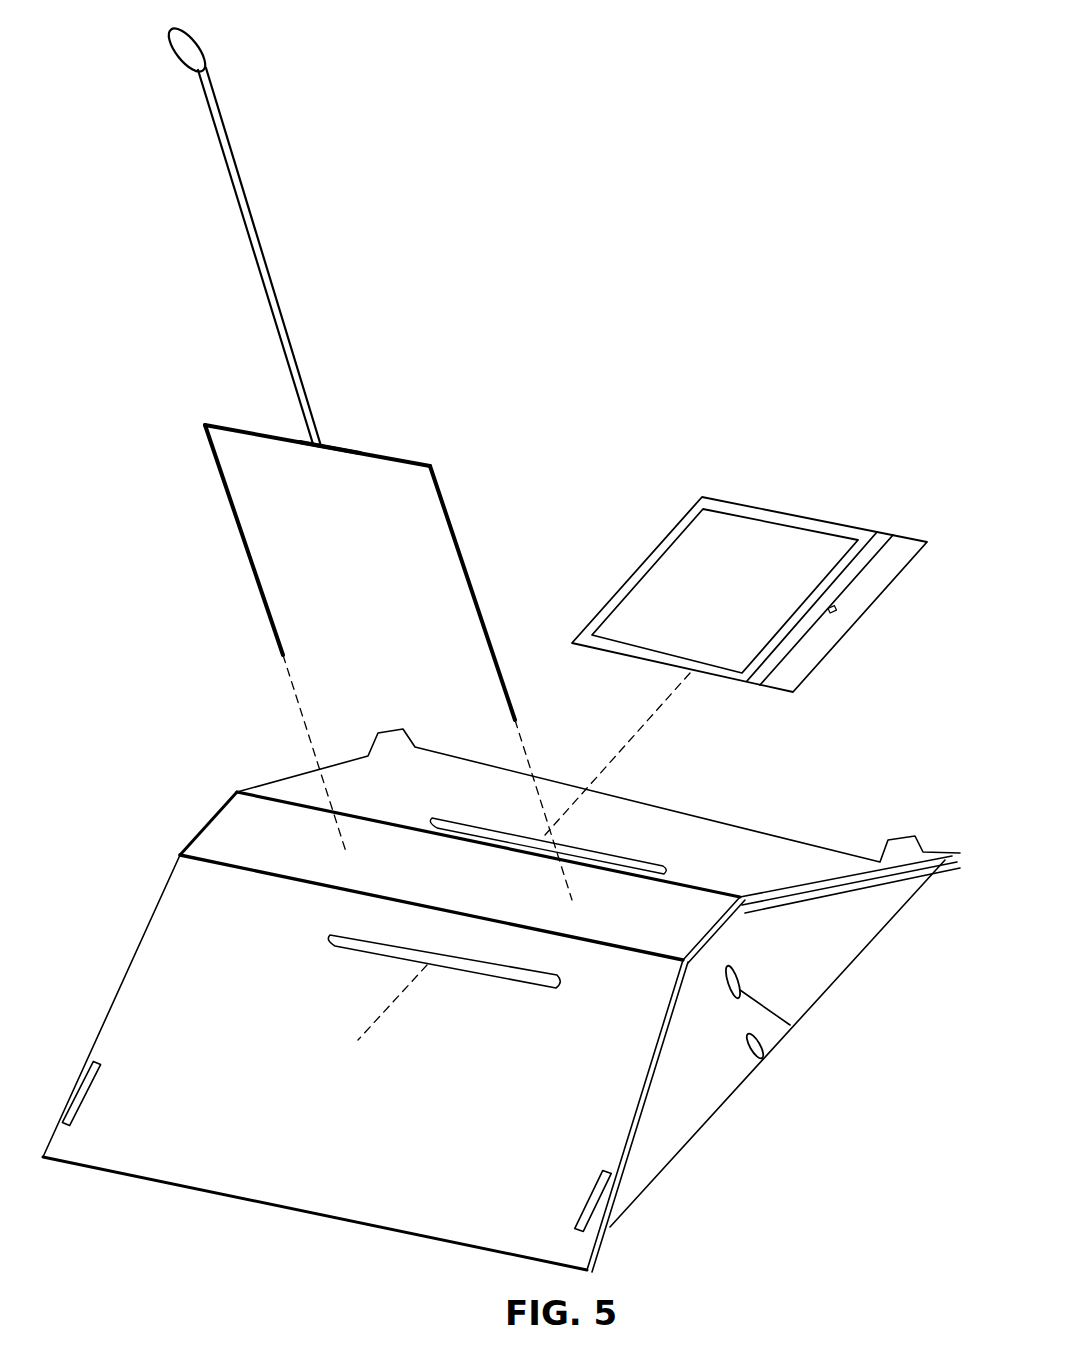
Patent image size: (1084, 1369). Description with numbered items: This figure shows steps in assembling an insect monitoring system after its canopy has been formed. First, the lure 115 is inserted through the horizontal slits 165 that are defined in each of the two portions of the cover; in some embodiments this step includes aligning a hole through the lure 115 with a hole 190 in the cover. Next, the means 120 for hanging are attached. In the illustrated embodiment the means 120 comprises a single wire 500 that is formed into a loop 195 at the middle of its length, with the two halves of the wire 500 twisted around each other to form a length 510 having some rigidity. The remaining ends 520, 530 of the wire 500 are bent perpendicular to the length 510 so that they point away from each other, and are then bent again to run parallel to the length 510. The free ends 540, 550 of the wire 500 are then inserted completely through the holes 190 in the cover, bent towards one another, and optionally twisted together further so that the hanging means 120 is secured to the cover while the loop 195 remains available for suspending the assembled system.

The lure 115 is at (640, 572).
The means for hanging 120 is at (395, 449).
The horizontal slits 165 is at (345, 937).
The hole 190 is at (572, 900).
The loop 195 is at (198, 42).
The wire 500 is at (434, 470).
The length 510 is at (248, 227).
The remaining end 520 is at (258, 428).
The remaining end 530 is at (348, 447).
The free end 540 is at (282, 655).
The free end 550 is at (508, 705).